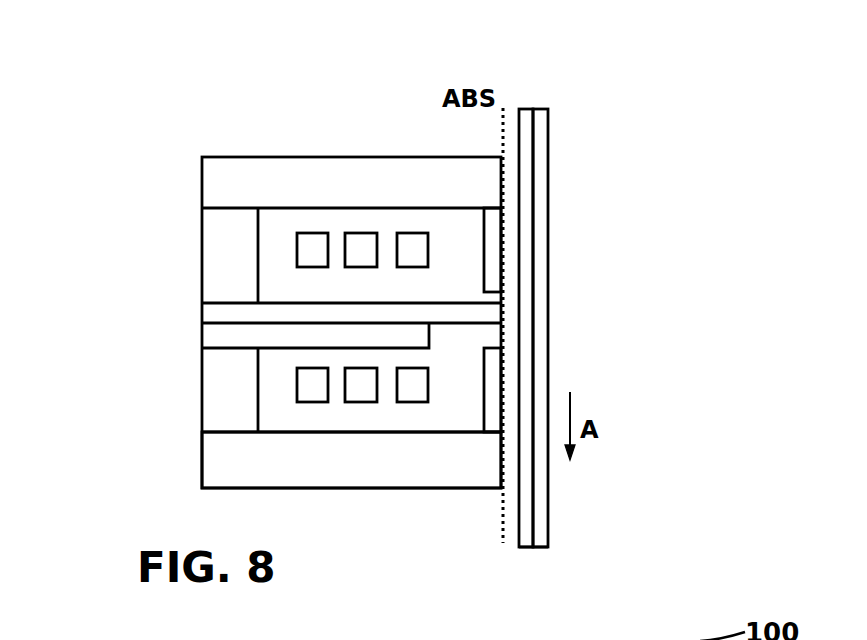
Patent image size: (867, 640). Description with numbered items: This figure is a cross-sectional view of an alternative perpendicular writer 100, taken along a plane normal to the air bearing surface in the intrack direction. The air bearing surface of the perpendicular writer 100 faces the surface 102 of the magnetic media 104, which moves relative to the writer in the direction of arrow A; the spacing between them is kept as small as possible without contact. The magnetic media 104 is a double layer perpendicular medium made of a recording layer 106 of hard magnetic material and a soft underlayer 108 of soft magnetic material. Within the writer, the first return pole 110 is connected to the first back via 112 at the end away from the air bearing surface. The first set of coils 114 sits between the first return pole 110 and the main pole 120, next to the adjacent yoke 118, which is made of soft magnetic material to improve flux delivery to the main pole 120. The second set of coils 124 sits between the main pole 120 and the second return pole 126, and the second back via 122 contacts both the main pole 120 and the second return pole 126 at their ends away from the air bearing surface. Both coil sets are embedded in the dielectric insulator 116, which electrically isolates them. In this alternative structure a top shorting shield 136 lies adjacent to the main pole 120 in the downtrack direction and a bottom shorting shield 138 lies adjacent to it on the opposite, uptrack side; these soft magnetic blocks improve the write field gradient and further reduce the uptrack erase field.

The perpendicular writer 100 is at (200, 120).
The surface 102 is at (524, 117).
The magnetic media 104 is at (540, 120).
The recording layer 106 is at (527, 532).
The soft underlayer 108 is at (540, 532).
The first return pole 110 is at (486, 453).
The first back via 112 is at (217, 405).
The first set of coils 114 is at (417, 375).
The insulator 116 is at (270, 240).
The yoke 118 is at (228, 328).
The main pole 120 is at (472, 313).
The second back via 122 is at (228, 282).
The second set of coils 124 is at (417, 239).
The second return pole 126 is at (472, 173).
The top shorting shield 136 is at (488, 257).
The bottom shorting shield 138 is at (486, 400).